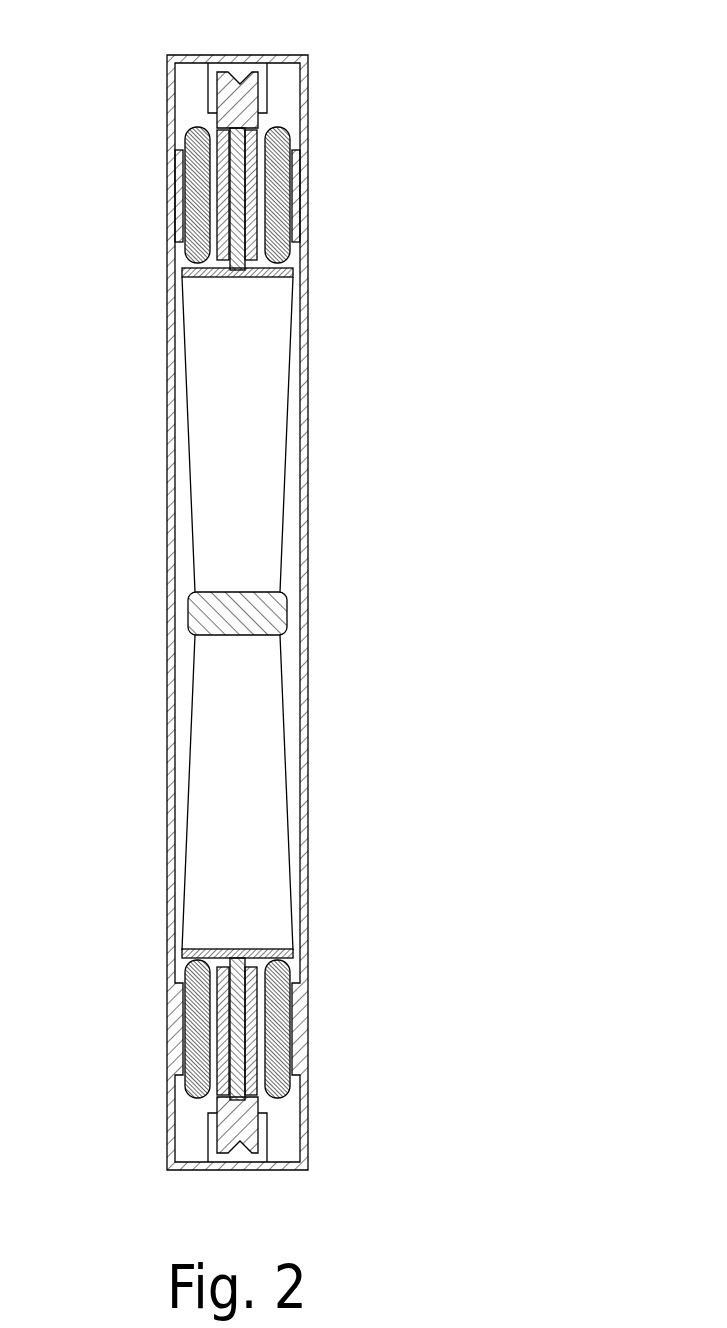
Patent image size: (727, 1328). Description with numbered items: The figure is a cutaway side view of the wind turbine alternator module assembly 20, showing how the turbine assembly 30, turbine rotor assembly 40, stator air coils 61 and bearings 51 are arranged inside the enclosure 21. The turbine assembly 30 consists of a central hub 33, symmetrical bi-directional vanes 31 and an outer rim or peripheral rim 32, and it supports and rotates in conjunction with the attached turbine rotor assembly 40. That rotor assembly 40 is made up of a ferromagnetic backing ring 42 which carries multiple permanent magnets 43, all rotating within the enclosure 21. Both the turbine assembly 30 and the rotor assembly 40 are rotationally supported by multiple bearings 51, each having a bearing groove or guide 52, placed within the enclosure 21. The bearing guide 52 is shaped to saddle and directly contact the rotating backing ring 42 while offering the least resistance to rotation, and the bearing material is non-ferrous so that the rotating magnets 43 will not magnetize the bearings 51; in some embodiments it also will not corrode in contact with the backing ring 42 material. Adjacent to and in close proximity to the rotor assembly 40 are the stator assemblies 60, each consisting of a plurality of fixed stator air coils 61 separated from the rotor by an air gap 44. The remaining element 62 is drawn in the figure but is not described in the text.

The wind turbine alternator module assembly 20 is at (160, 788).
The enclosure 21 is at (185, 168).
The turbine assembly 30 is at (238, 555).
The symmetrical bi-directional vanes 31 is at (262, 572).
The outer rim or peripheral rim 32 is at (183, 262).
The hub 33 is at (262, 627).
The turbine rotor assembly 40 is at (207, 1022).
The ferromagnetic backing ring 42 is at (250, 130).
The permanent magnets 43 is at (258, 160).
The air gap 44 is at (289, 190).
The bearings 51 is at (250, 78).
The bearing groove or guide 52 is at (240, 78).
The stator assemblies 60 is at (290, 1017).
The stator air coils 61 is at (293, 215).
The left magnet yoke 62 is at (292, 240).